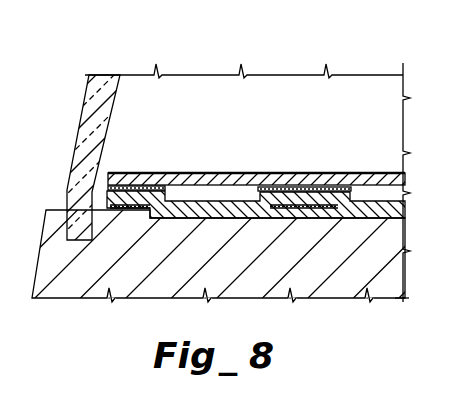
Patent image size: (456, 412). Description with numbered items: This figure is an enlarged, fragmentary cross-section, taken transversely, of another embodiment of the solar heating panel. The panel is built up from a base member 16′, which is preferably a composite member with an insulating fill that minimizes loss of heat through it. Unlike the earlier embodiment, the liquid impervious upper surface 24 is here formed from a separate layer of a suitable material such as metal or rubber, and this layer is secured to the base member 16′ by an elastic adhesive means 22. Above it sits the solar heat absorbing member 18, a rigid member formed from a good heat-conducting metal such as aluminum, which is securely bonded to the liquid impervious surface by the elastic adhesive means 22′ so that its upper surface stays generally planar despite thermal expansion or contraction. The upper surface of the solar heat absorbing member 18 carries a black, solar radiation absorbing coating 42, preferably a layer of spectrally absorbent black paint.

The base member 16′ is at (94, 300).
The solar heat absorbing member 18 is at (279, 181).
The elastic adhesive means 22 is at (455, 146).
The elastic adhesive means 22′ is at (323, 186).
The liquid impervious upper surface 24 is at (403, 212).
The solar radiation absorbing coating 42 is at (205, 173).